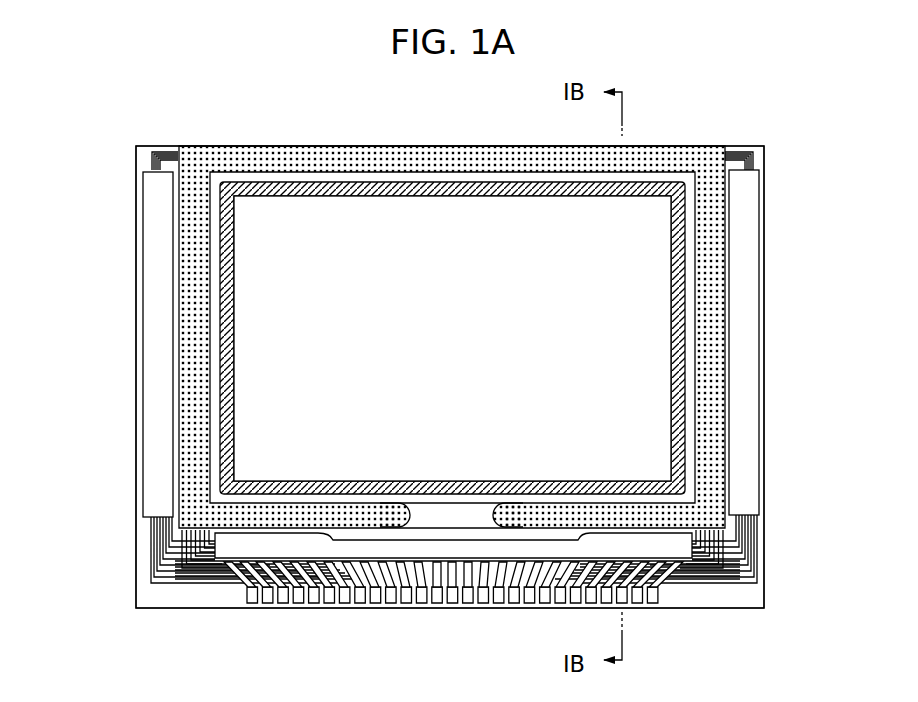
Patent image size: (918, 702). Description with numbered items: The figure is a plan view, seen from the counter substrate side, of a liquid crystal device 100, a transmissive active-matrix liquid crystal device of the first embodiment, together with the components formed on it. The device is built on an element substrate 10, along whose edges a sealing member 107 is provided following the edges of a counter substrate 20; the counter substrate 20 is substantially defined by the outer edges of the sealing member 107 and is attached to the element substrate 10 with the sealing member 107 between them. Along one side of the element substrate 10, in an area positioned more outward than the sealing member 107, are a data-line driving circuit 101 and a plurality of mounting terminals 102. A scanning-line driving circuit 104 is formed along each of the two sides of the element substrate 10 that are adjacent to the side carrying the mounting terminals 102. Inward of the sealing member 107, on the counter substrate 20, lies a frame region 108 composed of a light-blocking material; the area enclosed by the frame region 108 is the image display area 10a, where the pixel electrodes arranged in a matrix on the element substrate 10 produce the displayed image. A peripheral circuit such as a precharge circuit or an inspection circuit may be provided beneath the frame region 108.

The liquid crystal device 100 is at (718, 120).
The element substrate 10 is at (767, 465).
The image display area 10a is at (277, 287).
The counter substrate 20 is at (734, 494).
The data-line driving circuit 101 is at (256, 548).
The mounting terminals 102 is at (374, 603).
The scanning-line driving circuit 104 is at (155, 352).
The sealing member 107 is at (710, 327).
The frame region 108 is at (682, 258).